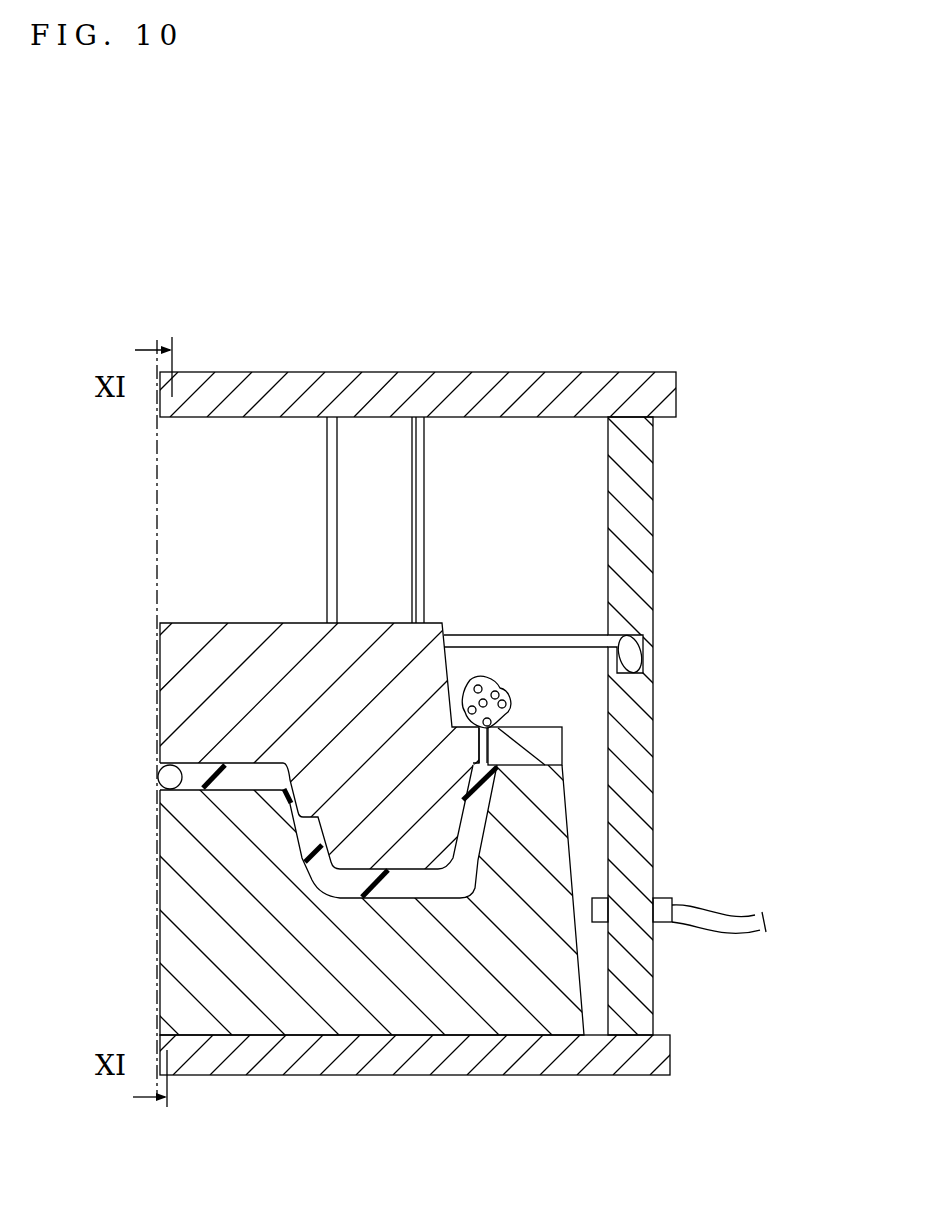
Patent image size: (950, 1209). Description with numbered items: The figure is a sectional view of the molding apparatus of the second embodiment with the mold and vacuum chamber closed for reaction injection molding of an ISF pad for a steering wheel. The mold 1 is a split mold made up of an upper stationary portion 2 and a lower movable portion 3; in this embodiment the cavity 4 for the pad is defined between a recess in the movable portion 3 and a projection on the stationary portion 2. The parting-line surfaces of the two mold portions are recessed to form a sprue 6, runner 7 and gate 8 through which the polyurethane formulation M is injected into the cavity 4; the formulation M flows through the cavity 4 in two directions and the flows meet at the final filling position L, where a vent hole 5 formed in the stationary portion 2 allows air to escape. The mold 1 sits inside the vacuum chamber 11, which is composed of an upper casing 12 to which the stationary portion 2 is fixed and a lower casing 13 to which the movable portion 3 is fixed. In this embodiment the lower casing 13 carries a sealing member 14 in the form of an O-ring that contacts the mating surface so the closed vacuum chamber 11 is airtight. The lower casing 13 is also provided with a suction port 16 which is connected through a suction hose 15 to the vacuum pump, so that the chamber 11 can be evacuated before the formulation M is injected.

The mold 1 is at (736, 663).
The upper stationary portion 2 is at (552, 752).
The lower movable portion 3 is at (552, 777).
The cavity 4 is at (389, 890).
The vent hole 5 is at (492, 762).
The sprue 6 is at (162, 772).
The runner 7 is at (240, 790).
The gate 8 is at (288, 800).
The vacuum chamber 11 is at (616, 354).
The upper casing 12 is at (652, 452).
The lower casing 13 is at (625, 866).
The sealing member 14 is at (646, 648).
The suction hose 15 is at (738, 922).
The suction port 16 is at (597, 922).
The final filling position L is at (477, 780).
The polyurethane formulation M is at (463, 832).